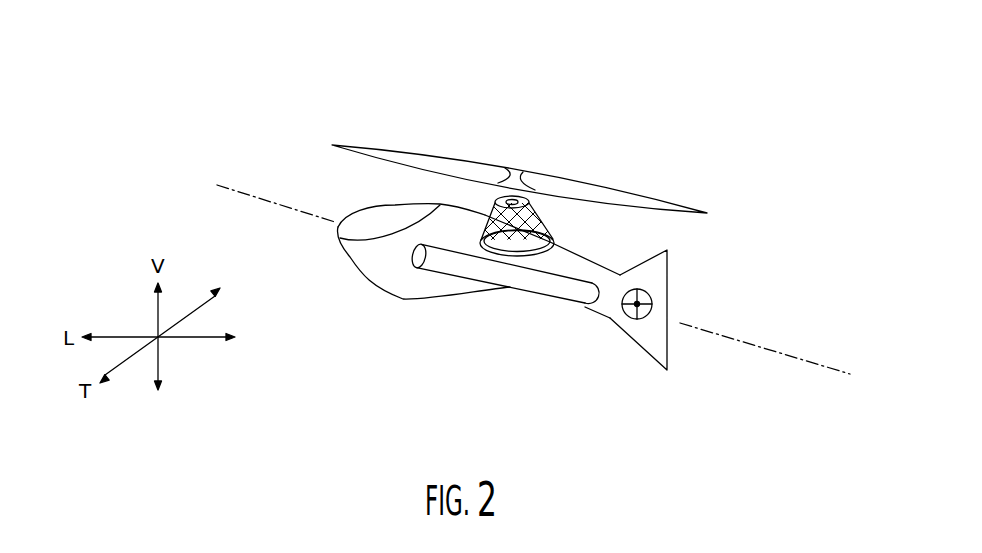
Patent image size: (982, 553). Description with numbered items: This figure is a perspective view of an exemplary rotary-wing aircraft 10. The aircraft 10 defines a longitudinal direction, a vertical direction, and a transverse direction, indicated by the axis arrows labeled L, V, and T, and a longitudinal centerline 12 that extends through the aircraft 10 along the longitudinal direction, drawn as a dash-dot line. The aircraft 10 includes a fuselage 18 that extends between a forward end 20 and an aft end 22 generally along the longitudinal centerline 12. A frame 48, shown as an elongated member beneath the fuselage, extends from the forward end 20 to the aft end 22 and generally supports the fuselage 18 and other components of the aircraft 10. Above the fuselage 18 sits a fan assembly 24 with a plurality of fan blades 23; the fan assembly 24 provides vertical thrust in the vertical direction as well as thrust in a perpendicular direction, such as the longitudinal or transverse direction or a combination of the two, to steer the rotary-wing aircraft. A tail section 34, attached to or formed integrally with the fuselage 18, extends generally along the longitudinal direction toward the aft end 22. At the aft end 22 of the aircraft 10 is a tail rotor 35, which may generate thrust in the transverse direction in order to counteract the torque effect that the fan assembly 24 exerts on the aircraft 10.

The aircraft 10 is at (262, 78).
The longitudinal centerline 12 is at (218, 183).
The fuselage 18 is at (398, 299).
The forward end 20 is at (332, 270).
The aft end 22 is at (749, 222).
The fan blades 23 is at (628, 190).
The fan assembly 24 is at (527, 144).
The tail section 34 is at (592, 339).
The tail rotor 35 is at (646, 292).
The frame 48 is at (510, 280).